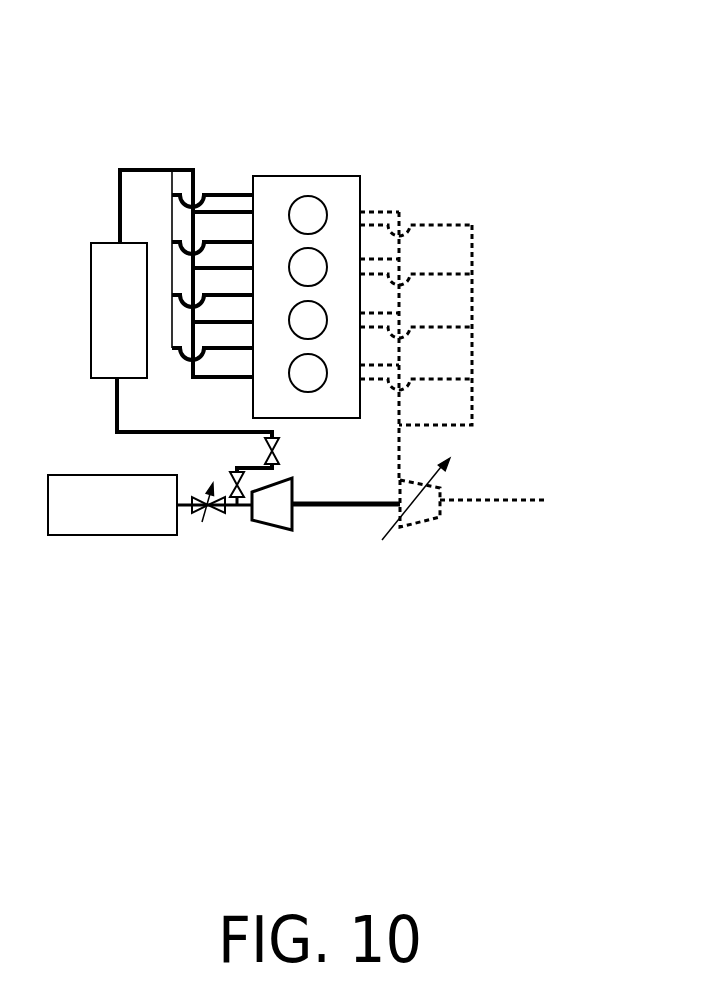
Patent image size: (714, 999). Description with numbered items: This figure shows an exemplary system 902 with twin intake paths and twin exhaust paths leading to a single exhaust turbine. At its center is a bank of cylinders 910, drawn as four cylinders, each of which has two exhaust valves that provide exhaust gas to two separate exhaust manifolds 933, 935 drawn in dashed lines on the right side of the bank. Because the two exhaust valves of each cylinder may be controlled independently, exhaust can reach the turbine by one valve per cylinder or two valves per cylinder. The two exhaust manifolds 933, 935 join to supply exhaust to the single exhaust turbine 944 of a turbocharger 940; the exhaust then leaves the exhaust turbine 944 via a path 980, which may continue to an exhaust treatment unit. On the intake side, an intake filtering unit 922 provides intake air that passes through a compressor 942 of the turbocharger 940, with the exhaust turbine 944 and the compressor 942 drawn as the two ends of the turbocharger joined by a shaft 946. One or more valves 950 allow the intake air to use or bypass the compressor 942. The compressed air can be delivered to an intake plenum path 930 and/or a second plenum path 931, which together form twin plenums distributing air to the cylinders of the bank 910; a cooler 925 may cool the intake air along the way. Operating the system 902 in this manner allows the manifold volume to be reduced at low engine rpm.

The system 902 is at (427, 25).
The bank of cylinders 910 is at (315, 175).
The intake filtering unit 922 is at (131, 516).
The cooler 925 is at (137, 321).
The intake plenum path 930 is at (193, 169).
The plenum path 931 is at (168, 207).
The exhaust manifold 933 is at (399, 212).
The exhaust manifold 935 is at (472, 253).
The turbocharger 940 is at (300, 571).
The compressor 942 is at (262, 521).
The exhaust turbine 944 is at (428, 518).
The shaft 946 is at (350, 509).
The valves 950 is at (202, 452).
The path 980 is at (472, 500).